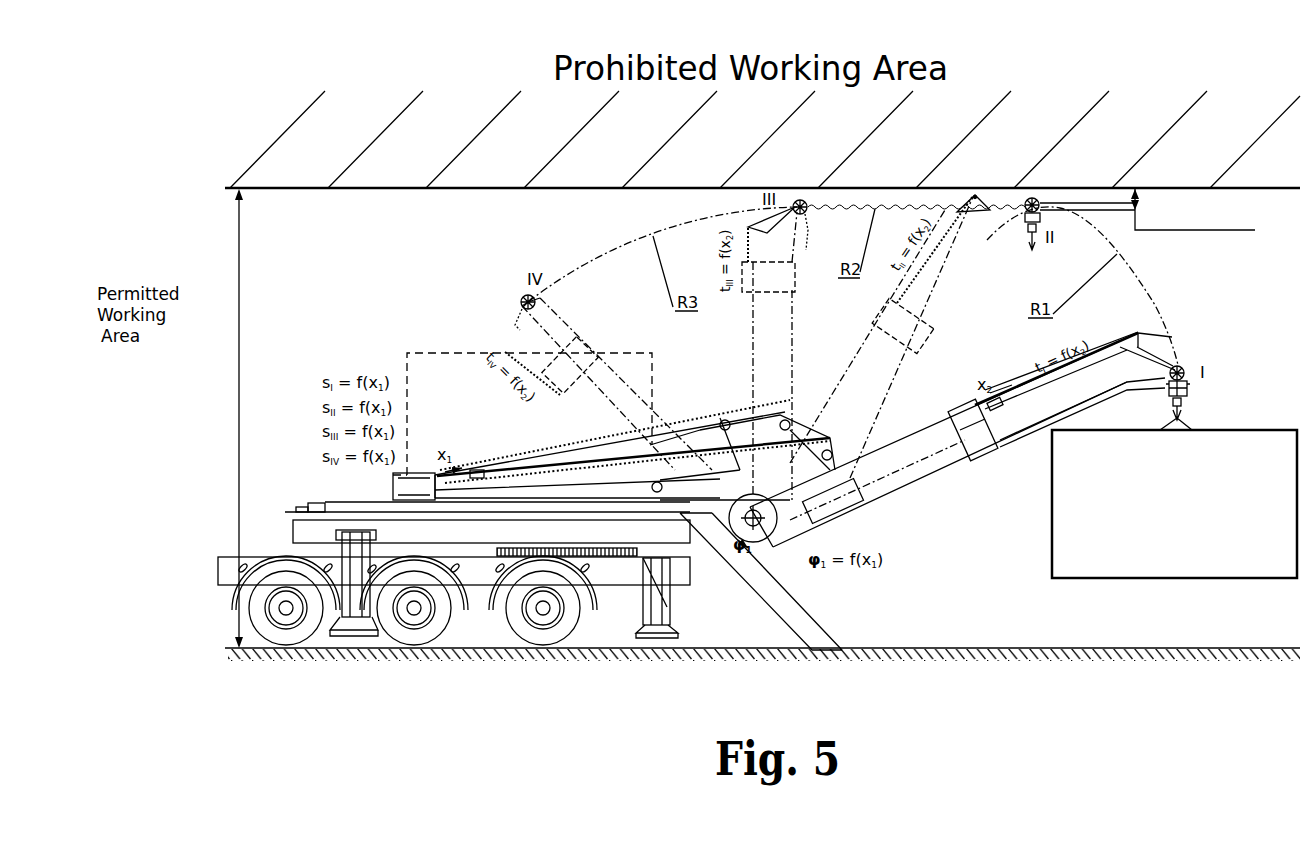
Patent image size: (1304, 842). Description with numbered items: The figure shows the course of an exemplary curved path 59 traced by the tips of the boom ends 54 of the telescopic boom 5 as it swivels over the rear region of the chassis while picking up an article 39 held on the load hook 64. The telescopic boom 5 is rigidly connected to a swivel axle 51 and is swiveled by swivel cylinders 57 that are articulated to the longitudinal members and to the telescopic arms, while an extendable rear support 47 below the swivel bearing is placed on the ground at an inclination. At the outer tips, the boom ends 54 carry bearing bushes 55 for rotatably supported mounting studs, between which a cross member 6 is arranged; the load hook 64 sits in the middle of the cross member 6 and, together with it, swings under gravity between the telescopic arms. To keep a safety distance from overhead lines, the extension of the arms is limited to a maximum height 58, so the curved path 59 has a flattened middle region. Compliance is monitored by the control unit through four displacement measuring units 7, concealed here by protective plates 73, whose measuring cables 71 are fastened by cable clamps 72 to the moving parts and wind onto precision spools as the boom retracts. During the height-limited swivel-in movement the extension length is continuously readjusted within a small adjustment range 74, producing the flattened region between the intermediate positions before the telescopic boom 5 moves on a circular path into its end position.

The telescopic boom 5 is at (927, 515).
The cross member 6 is at (1189, 386).
The displacement measuring unit 7 is at (404, 494).
The article 39 is at (1200, 582).
The rear support 47 is at (783, 626).
The swivel axle 51 is at (762, 526).
The extendable boom end 54 is at (1023, 440).
The bearing bush 55 is at (1185, 375).
The swivel cylinder 57 is at (573, 503).
The maximum height 58 is at (352, 191).
The curved path 59 is at (1182, 366).
The load hook 64 is at (1184, 408).
The measuring cable 71 is at (477, 477).
The cable clamp 72 is at (1172, 337).
The protective plate 73 is at (416, 480).
The adjustment range 74 is at (1161, 213).